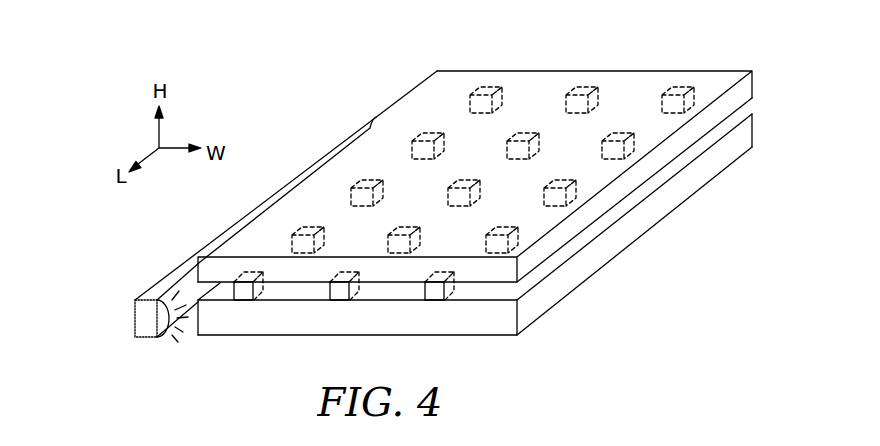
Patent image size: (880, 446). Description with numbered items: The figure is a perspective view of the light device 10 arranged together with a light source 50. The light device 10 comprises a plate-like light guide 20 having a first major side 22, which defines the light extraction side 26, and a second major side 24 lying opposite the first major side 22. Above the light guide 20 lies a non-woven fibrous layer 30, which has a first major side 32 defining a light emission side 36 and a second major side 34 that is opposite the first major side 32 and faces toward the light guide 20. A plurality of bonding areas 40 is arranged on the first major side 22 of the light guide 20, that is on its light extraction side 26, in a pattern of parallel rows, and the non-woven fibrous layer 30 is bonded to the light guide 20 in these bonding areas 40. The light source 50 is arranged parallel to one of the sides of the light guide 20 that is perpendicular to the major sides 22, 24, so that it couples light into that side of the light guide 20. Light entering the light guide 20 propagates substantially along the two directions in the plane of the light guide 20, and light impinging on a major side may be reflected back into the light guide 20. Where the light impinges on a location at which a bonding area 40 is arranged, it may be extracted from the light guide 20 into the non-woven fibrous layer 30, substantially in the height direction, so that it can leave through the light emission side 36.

The light device 10 is at (306, 101).
The light guide 20 is at (197, 323).
The first major side 22 is at (492, 300).
The second major side 24 is at (489, 336).
The light extraction side 26 is at (595, 230).
The non-woven fibrous layer 30 is at (194, 270).
The first major side 32 is at (710, 77).
The second major side 34 is at (747, 104).
The light emission side 36 is at (637, 83).
The bonding areas 40 is at (242, 290).
The light source 50 is at (153, 292).